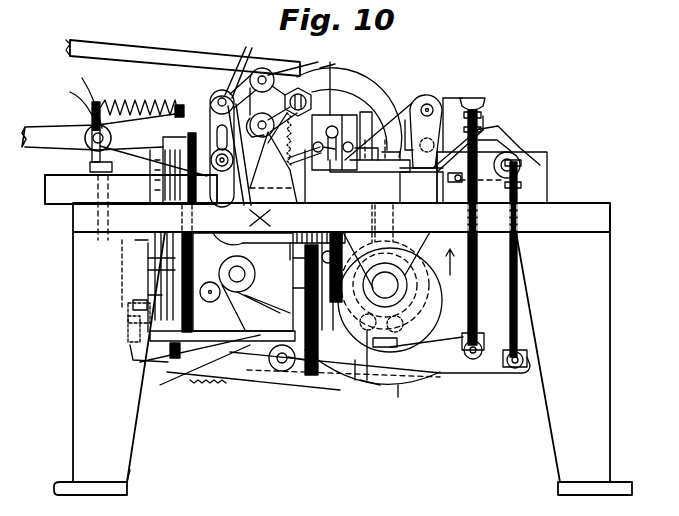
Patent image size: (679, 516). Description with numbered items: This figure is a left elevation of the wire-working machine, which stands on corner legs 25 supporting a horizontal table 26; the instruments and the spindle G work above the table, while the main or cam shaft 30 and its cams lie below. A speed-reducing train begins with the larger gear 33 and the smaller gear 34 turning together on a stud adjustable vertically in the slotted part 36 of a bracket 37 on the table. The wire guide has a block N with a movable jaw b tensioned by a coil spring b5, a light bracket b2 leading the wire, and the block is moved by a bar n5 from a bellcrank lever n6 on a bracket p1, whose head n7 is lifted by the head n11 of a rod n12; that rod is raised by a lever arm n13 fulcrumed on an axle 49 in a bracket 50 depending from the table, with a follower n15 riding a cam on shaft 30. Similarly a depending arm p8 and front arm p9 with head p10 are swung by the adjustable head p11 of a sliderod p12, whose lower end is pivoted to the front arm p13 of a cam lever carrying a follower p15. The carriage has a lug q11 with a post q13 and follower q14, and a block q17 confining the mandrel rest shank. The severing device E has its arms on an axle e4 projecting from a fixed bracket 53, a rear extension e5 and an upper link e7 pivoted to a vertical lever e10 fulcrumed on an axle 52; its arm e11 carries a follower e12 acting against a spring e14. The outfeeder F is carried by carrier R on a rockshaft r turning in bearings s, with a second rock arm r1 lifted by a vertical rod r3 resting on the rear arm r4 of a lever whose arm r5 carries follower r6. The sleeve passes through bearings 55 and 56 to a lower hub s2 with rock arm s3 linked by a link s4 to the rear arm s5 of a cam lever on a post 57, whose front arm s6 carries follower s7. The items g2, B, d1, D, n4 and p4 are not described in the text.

The larger gear 33 is at (240, 50).
The smaller gear 34 is at (262, 67).
The upper link e7 is at (268, 69).
The rear extension e5 is at (302, 86).
The common axle e4 is at (323, 69).
The spindle G is at (345, 76).
The severing device E is at (360, 98).
The rod g2 is at (384, 110).
The bar B is at (393, 133).
The coil spring b5 is at (420, 97).
The bracket p1 is at (471, 97).
The bellcrank lever n6 is at (452, 100).
The head n7 is at (483, 110).
The bar n5 is at (487, 113).
The head n11 is at (483, 118).
The front arm p9 is at (515, 137).
The head p10 is at (523, 157).
The adjustable head p11 is at (528, 165).
The table 26 is at (610, 215).
The corner legs 25 is at (603, 332).
The foot d1 is at (129, 492).
The sliderod p12 is at (522, 306).
The rod n12 is at (476, 294).
The front arm p13 is at (485, 377).
The lever arm n13 is at (397, 397).
The follower s7 is at (413, 377).
The follower e12 is at (378, 395).
The front arm s6 is at (330, 386).
The frontwardly extending arm r5 is at (327, 387).
The depending bracket 57 is at (287, 367).
The axle 49 is at (277, 350).
The bracket 50 is at (277, 330).
The rear arm s5 is at (213, 337).
The rear arm r4 is at (170, 363).
The vertical rod r3 is at (140, 362).
The longitudinal link s4 is at (130, 322).
The rock arm s3 is at (135, 313).
The lower collar s2 is at (150, 295).
The bearing 56 is at (160, 270).
The vertical lever e10 is at (160, 258).
The bearings s is at (135, 240).
The bracket 37 is at (48, 188).
The outfeeder F is at (131, 207).
The bearing 55 is at (217, 142).
The outfeeder carrier R is at (69, 104).
The rock arm r1 is at (84, 101).
The rockshaft r is at (92, 133).
The spring e14 is at (147, 100).
The slotted part 36 is at (208, 96).
The block q17 is at (280, 152).
The fixed bracket 53 is at (288, 193).
The beam D is at (341, 217).
The projecting lug q11 is at (400, 188).
The depending arm p8 is at (431, 187).
The movable jaw b is at (366, 191).
The light bracket b2 is at (391, 191).
The block N is at (421, 132).
The post q13 is at (425, 240).
The follower q14 is at (426, 256).
The follower p15 is at (317, 267).
The axle 52 is at (234, 262).
The frontwardly extending arm e11 is at (292, 300).
The follower n15 is at (283, 249).
The pin n4 is at (290, 264).
The pin p4 is at (304, 287).
The cam shaft 30 is at (385, 284).
The follower r6 is at (392, 310).